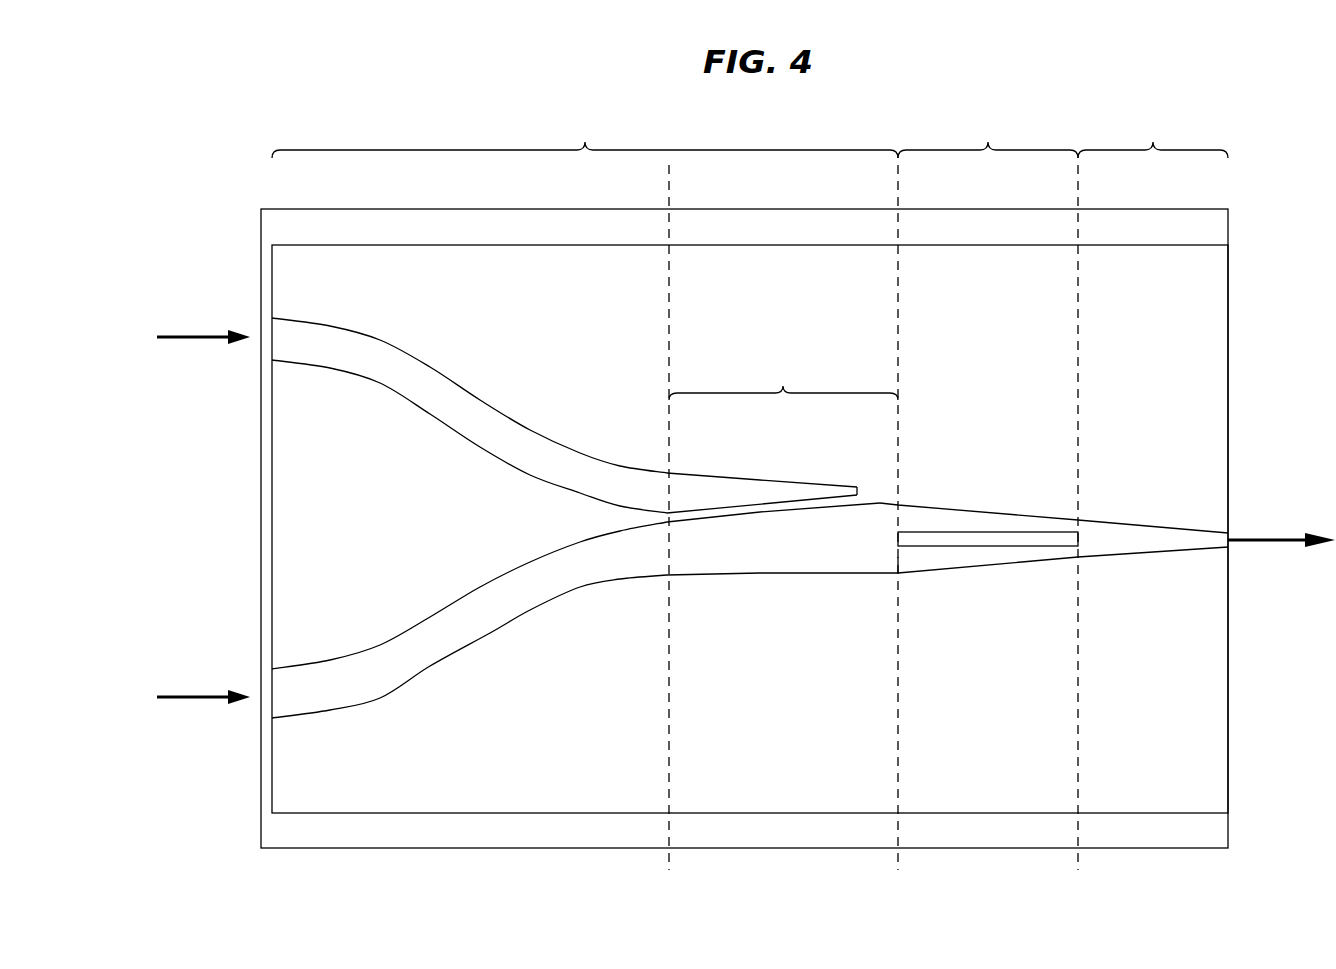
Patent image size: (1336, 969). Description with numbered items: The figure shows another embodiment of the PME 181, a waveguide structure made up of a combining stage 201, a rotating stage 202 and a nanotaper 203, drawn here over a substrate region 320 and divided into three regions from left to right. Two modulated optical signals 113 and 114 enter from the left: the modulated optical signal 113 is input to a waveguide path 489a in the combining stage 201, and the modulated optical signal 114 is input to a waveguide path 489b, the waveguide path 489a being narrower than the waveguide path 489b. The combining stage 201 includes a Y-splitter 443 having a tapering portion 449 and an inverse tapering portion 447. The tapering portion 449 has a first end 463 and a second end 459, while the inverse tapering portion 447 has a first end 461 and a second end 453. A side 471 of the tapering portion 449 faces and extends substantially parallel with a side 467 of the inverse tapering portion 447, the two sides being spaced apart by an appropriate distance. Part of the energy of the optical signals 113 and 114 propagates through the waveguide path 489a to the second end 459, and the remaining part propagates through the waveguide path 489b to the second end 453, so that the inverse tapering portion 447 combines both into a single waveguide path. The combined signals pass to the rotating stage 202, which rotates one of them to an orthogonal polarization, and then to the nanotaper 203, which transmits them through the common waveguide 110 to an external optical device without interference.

The PME 181 is at (294, 92).
The combining stage 201 is at (585, 491).
The rotating stage 202 is at (979, 491).
The nanotaper 203 is at (1153, 335).
The modulated optical signal 113 is at (196, 288).
The modulated optical signal 114 is at (196, 648).
The waveguide path 489a is at (478, 423).
The waveguide path 489b is at (489, 612).
The Y-splitter 443 is at (783, 380).
The first end 463 is at (678, 493).
The tapering portion 449 is at (762, 493).
The side 471 is at (790, 502).
The second end 459 is at (858, 490).
The first end 461 is at (670, 546).
The inverse tapering portion 447 is at (744, 546).
The side 467 is at (810, 508).
The second end 453 is at (897, 556).
The common waveguide 110 is at (1281, 537).
The substrate / chip 320 is at (435, 785).